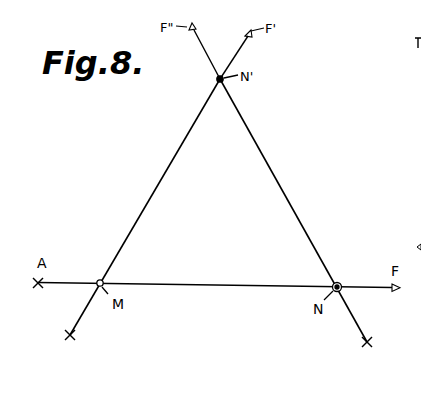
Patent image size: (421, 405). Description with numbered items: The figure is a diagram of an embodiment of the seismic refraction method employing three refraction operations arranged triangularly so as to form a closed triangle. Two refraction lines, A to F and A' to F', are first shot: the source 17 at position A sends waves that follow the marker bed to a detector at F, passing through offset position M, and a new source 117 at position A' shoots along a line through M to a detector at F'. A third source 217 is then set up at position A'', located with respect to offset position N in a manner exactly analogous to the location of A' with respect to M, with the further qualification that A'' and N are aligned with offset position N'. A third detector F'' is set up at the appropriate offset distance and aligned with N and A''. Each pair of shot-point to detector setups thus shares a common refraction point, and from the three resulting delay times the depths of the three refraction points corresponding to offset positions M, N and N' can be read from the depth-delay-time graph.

The source 17 is at (39, 285).
The new source 117 is at (68, 338).
The third source 217 is at (364, 341).